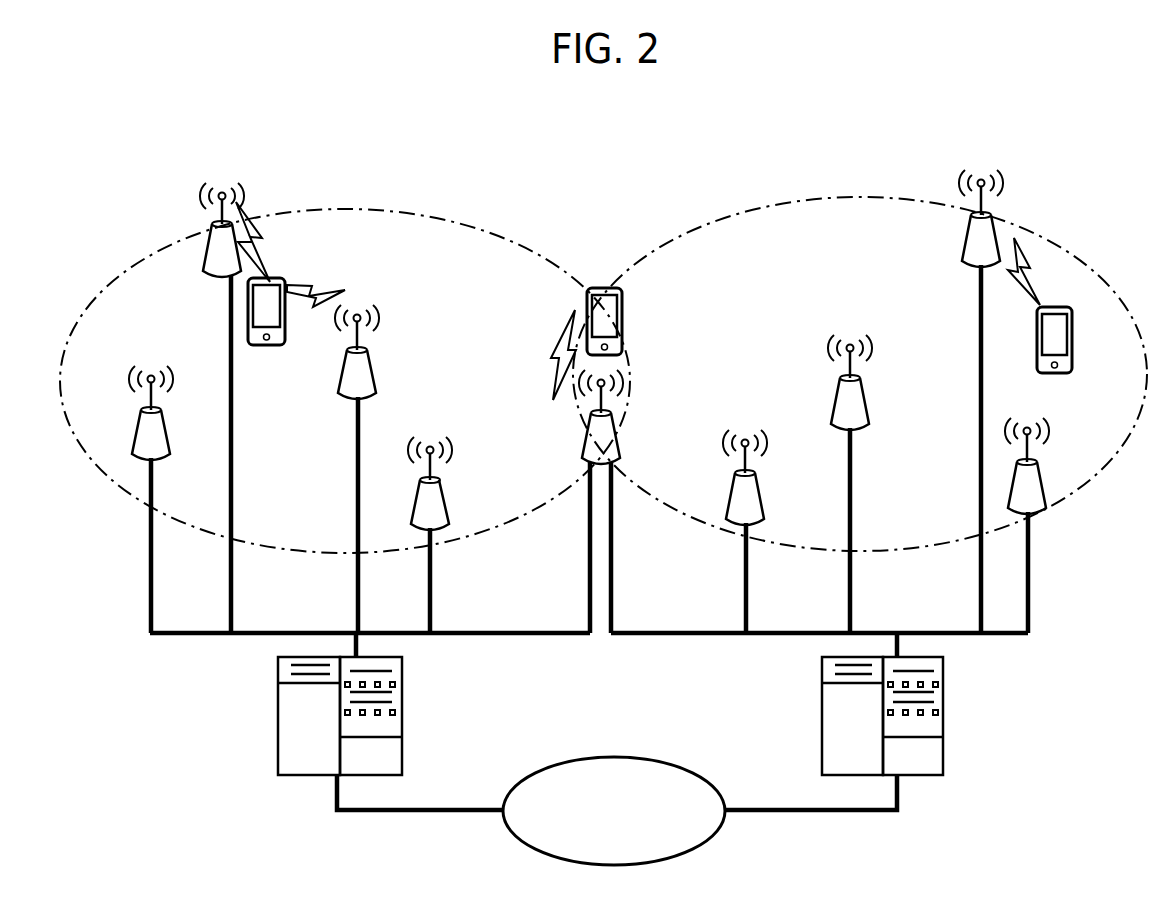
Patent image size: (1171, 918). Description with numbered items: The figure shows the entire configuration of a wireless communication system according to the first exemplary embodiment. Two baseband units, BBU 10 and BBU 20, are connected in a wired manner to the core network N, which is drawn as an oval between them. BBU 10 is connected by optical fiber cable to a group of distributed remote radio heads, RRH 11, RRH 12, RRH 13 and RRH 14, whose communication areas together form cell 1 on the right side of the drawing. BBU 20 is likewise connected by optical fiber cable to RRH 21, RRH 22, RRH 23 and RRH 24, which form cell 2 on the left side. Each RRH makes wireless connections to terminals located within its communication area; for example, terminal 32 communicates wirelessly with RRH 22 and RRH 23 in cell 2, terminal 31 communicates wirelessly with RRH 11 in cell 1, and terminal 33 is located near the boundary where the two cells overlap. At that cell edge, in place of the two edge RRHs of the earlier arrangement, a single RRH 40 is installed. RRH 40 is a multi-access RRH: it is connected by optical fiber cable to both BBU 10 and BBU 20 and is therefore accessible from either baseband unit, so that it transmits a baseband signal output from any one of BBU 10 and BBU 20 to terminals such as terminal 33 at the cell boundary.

The cell 1 is at (1092, 276).
The cell 2 is at (425, 211).
The BBU 10 is at (944, 725).
The RRH 11 is at (992, 214).
The RRH 12 is at (1040, 463).
The RRH 13 is at (864, 387).
The RRH 14 is at (758, 482).
The BBU 20 is at (403, 724).
The RRH 21 is at (140, 419).
The RRH 22 is at (203, 270).
The RRH 23 is at (369, 357).
The RRH 24 is at (418, 496).
The terminal 31 is at (1072, 356).
The terminal 32 is at (271, 347).
The terminal 33 is at (600, 285).
The RRH 40 is at (584, 444).
The core network N is at (660, 760).